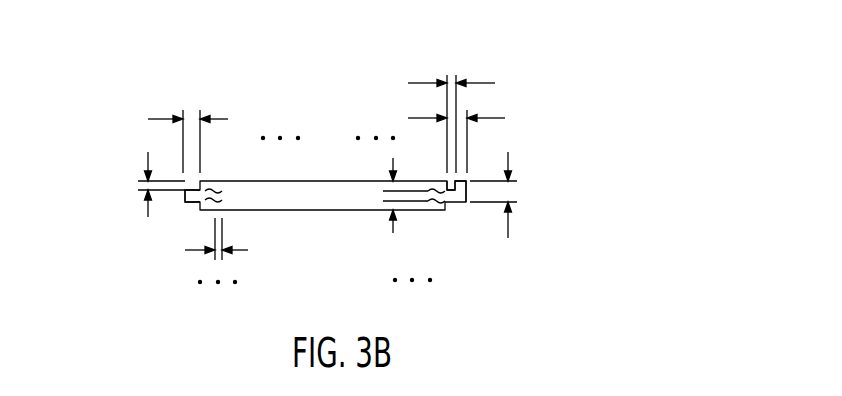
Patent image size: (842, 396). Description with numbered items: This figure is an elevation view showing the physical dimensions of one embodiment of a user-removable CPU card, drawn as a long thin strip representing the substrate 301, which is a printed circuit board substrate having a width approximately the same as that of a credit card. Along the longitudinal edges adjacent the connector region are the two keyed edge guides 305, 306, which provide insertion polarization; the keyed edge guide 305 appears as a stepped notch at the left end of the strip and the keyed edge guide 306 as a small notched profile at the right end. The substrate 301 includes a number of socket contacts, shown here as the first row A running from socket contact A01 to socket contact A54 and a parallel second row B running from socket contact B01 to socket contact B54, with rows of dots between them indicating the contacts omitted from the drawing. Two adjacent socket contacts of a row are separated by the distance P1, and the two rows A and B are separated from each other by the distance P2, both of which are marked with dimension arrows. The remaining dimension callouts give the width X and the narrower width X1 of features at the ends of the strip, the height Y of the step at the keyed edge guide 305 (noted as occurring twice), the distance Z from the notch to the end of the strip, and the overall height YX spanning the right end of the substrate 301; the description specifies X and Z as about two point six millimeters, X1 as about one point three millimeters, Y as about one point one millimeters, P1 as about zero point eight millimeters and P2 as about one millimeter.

The substrate 301 is at (352, 81).
The keyed edge guide 305 is at (187, 204).
The keyed edge guide 306 is at (466, 182).
The socket contact A54 is at (207, 189).
The socket contact A01 is at (435, 189).
The socket contact B54 is at (203, 211).
The socket contact B01 is at (443, 211).
The dimension X is at (180, 140).
The dimension X1 is at (466, 122).
The dimension Z is at (465, 140).
The dimension Y is at (148, 217).
The height YX is at (508, 195).
The contact spacing p1 P1 is at (230, 240).
The row spacing p2 P2 is at (393, 233).